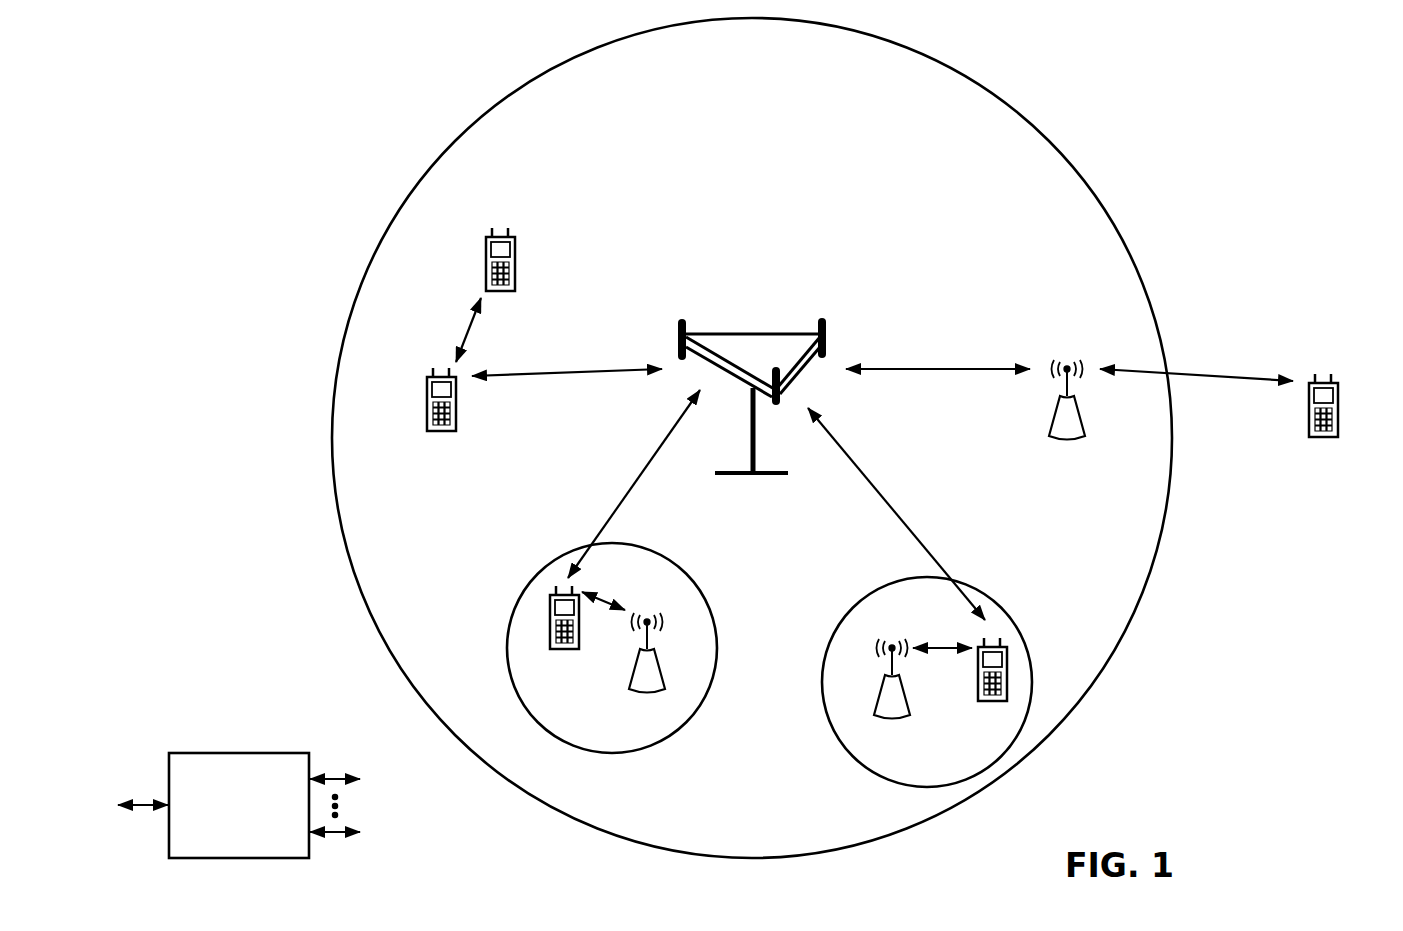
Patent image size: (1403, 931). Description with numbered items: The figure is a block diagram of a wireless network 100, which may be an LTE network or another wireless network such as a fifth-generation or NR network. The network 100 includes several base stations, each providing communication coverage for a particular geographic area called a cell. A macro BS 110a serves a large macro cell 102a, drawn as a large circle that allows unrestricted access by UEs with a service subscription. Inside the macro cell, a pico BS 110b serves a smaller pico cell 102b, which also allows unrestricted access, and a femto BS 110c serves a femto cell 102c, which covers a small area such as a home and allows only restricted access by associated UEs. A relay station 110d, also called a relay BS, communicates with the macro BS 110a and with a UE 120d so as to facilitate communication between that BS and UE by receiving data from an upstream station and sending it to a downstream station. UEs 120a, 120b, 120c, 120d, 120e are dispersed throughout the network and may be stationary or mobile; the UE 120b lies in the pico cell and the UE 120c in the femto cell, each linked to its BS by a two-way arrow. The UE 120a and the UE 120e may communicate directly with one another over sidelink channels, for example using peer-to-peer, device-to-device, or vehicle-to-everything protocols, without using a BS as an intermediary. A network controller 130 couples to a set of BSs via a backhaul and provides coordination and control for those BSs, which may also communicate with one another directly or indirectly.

The wireless network 100 is at (1228, 100).
The macro cell 102a is at (1046, 107).
The pico cell 102b is at (705, 565).
The femto cell 102c is at (848, 613).
The macro BS 110a is at (762, 321).
The pico BS 110b is at (675, 663).
The femto BS 110c is at (876, 700).
The relay station 110d is at (1067, 365).
The UE 120a is at (427, 387).
The UE 120b is at (550, 640).
The UE 120c is at (978, 697).
The UE 120d is at (1352, 385).
The UE 120e is at (486, 248).
The network controller 130 is at (237, 752).